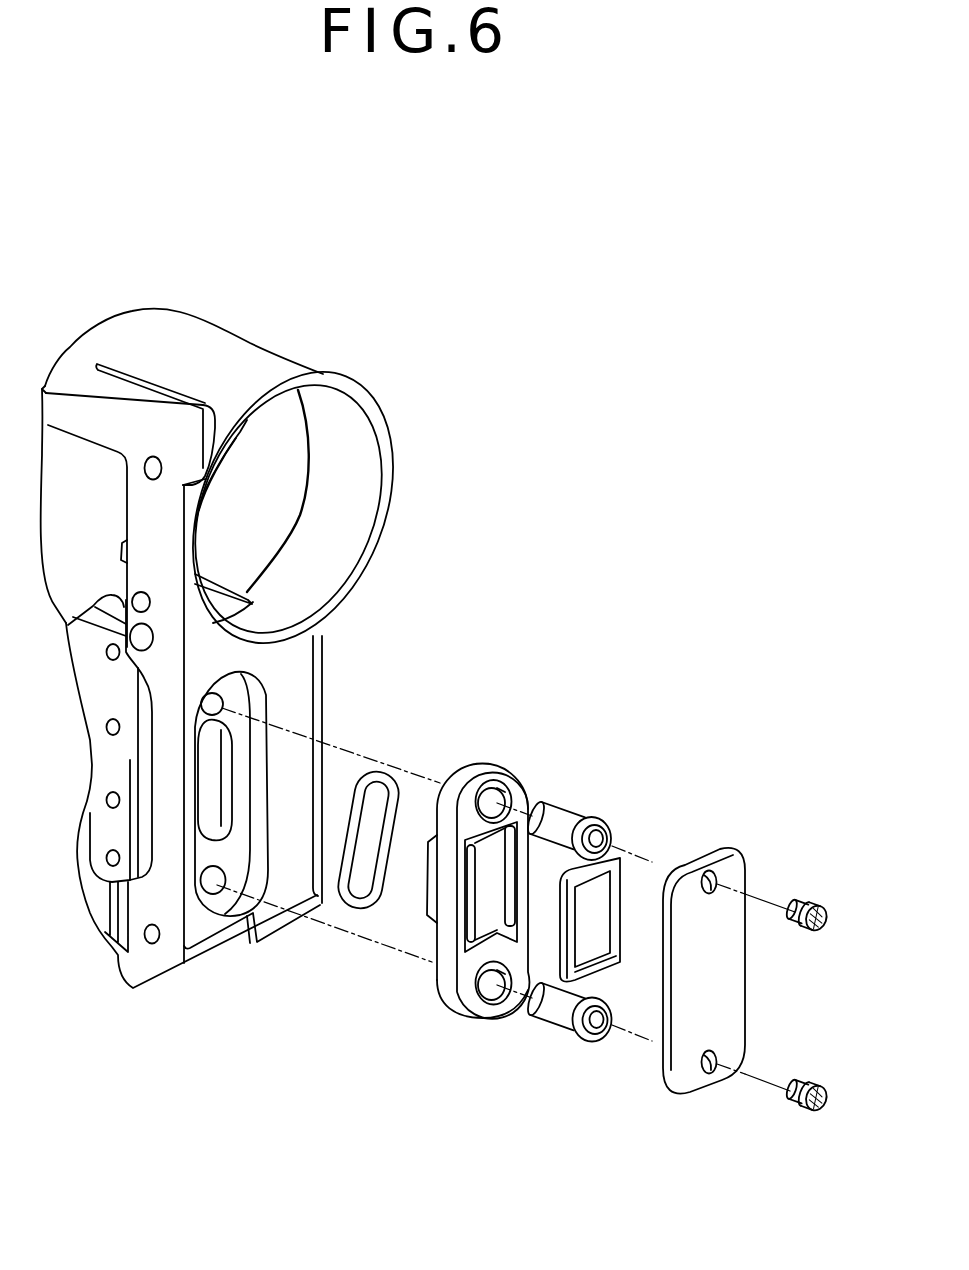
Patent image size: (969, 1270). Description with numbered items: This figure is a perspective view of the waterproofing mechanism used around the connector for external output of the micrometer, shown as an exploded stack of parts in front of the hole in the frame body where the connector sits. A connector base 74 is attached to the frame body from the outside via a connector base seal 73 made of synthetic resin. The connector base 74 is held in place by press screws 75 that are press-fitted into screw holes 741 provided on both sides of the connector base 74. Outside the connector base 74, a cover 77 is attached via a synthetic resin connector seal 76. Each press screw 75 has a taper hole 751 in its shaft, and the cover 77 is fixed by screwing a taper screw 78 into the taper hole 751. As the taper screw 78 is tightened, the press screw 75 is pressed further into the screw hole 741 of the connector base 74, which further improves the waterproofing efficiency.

The connector base seal 73 is at (362, 772).
The connector base 74 is at (476, 765).
The screw holes 741 is at (522, 790).
The press screws 75 is at (587, 881).
The taper hole 751 is at (600, 835).
The connector seal 76 is at (611, 852).
The cover 77 is at (715, 850).
The taper screw 78 is at (807, 902).